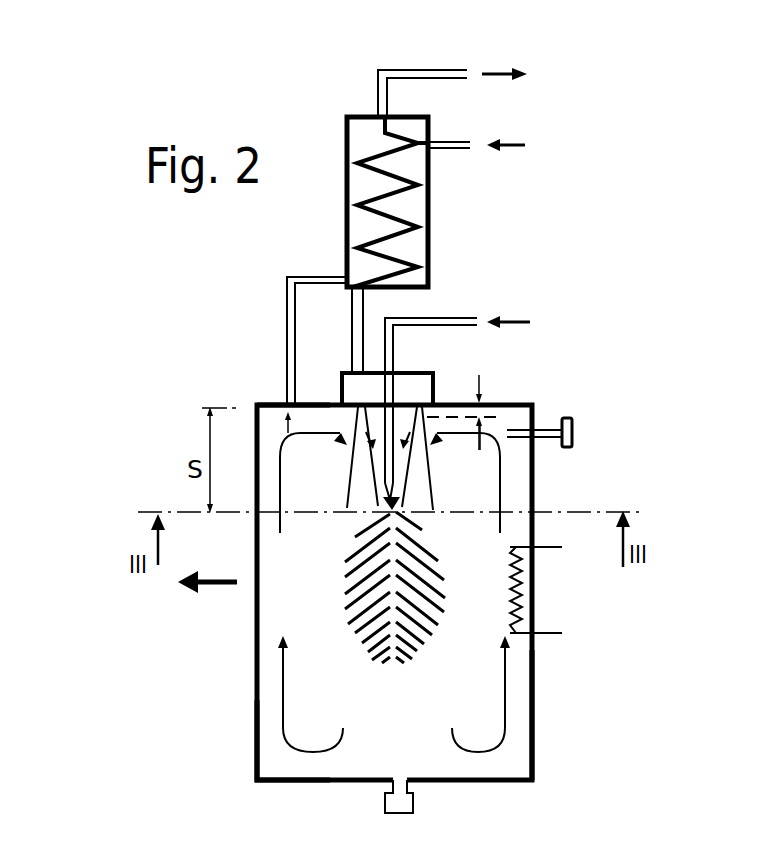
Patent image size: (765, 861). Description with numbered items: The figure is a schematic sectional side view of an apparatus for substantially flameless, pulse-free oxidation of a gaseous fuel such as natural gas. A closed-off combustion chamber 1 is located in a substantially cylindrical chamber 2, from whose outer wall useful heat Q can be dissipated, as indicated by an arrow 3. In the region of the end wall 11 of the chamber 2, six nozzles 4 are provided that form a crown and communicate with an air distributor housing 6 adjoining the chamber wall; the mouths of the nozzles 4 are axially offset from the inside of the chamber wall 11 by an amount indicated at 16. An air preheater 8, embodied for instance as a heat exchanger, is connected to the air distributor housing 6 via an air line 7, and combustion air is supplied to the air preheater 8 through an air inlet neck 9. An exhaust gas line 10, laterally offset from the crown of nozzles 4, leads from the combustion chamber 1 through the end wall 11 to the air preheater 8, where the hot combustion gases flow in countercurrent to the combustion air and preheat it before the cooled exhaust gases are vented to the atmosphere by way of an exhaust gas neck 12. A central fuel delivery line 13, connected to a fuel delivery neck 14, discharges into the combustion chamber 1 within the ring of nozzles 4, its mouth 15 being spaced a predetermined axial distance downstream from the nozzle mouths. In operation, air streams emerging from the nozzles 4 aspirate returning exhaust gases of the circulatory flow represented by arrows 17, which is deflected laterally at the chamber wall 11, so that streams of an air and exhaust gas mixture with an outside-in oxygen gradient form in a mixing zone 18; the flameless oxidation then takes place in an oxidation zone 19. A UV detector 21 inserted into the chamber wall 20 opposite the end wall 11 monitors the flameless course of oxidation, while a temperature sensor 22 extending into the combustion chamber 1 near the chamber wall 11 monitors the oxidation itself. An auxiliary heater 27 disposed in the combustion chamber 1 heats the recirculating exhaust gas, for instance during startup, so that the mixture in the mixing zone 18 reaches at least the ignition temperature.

The combustion chamber 1 is at (410, 729).
The chamber 2 is at (252, 682).
The arrow 3 is at (214, 578).
The nozzles 4 is at (482, 400).
The air distributor housing 6 is at (342, 385).
The air line 7 is at (353, 310).
The air preheater 8 is at (348, 168).
The air inlet neck 9 is at (452, 140).
The exhaust gas line 10 is at (287, 330).
The end wall 11 is at (254, 404).
The exhaust gas neck 12 is at (443, 69).
The fuel delivery line 13 is at (395, 360).
The fuel delivery neck 14 is at (455, 318).
The mouth 15 is at (405, 497).
The axial offset 16 is at (497, 410).
The arrows 17 is at (507, 734).
The mixing zone 18 is at (270, 428).
The oxidation zone 19 is at (425, 635).
The chamber wall 20 is at (280, 782).
The UV detector 21 is at (405, 805).
The temperature sensor 22 is at (572, 424).
The auxiliary heater 27 is at (525, 588).